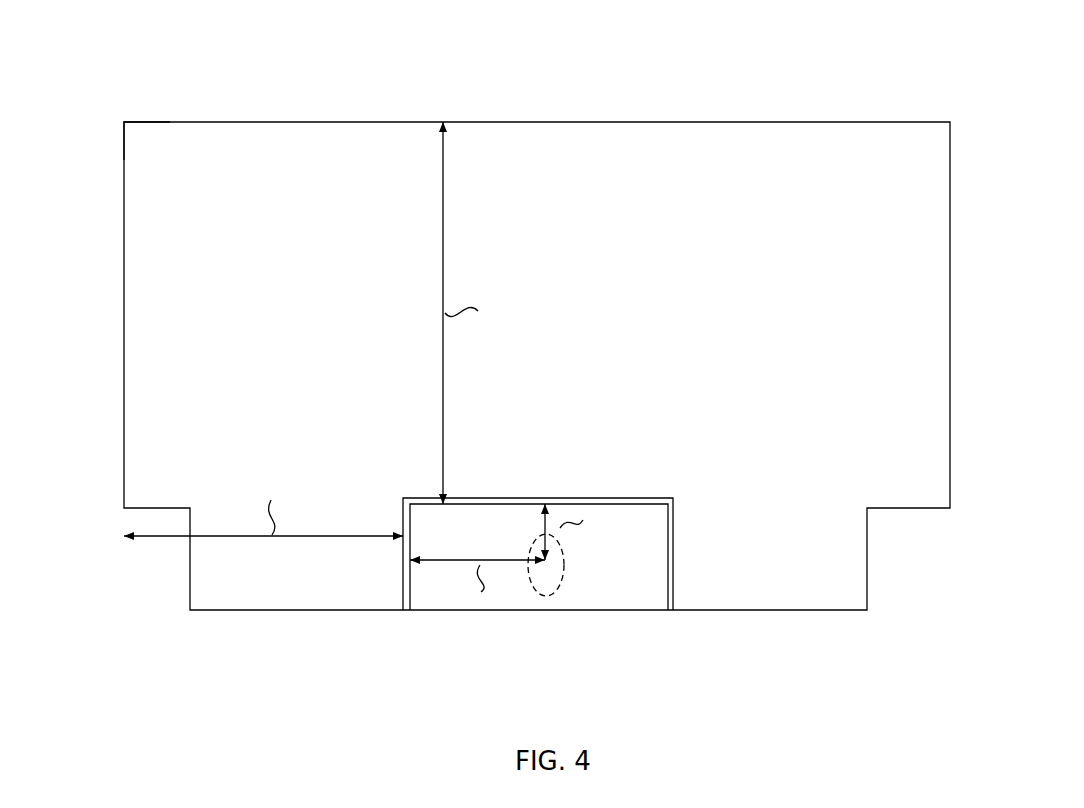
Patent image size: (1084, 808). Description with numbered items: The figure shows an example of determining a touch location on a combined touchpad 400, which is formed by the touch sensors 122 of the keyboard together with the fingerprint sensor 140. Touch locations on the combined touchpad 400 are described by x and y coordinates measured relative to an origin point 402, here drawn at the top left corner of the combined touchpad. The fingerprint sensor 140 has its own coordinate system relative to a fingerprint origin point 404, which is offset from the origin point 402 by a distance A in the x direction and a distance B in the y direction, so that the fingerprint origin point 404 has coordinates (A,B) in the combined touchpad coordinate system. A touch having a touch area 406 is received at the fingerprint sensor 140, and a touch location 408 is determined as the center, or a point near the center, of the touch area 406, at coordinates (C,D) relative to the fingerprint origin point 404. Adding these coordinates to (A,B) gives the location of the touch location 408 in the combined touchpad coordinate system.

The combined touchpad 400 is at (294, 64).
The origin point 402 is at (124, 118).
The touch sensors 122 is at (128, 310).
The fingerprint origin point 404 is at (405, 503).
The fingerprint sensor 140 is at (630, 602).
The touch area 406 is at (538, 593).
The touch location 408 is at (548, 563).